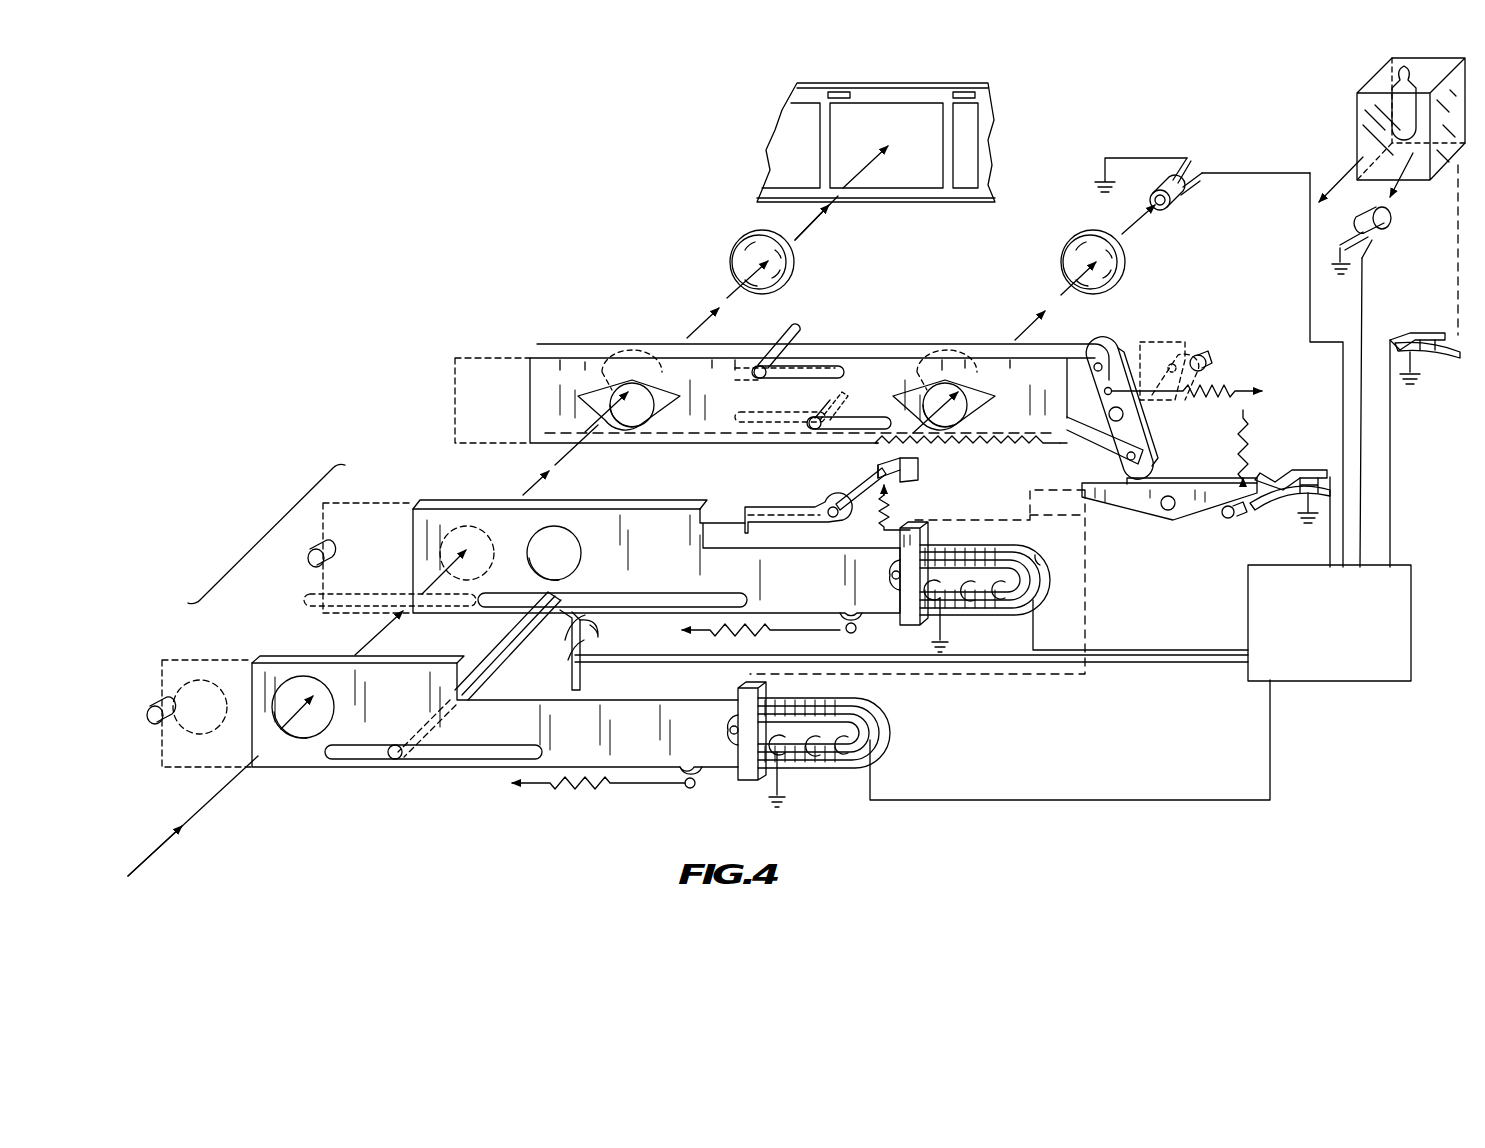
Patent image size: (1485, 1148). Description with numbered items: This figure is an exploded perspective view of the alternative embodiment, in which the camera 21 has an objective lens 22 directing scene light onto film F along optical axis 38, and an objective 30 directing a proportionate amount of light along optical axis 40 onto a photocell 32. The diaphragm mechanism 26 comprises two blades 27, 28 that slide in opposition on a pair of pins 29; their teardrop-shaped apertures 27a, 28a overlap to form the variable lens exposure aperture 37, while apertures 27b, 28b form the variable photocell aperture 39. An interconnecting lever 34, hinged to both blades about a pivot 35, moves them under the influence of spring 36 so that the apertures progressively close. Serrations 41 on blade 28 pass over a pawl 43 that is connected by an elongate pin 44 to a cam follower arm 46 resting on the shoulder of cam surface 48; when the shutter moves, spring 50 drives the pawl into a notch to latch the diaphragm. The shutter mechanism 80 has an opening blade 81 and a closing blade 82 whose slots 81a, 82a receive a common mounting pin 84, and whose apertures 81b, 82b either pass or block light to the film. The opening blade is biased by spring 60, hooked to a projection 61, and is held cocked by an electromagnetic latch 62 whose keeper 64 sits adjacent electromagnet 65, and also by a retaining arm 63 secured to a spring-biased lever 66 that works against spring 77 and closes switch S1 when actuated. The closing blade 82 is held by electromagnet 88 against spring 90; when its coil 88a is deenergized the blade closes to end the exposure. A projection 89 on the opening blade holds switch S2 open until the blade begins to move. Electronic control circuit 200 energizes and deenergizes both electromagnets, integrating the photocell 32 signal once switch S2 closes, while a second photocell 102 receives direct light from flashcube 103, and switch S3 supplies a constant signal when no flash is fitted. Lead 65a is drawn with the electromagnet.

The film F is at (900, 72).
The camera 21 is at (254, 441).
The objective lens 22 is at (794, 262).
The diaphragm mechanism 26 is at (436, 398).
The diaphragm blade 27 is at (585, 342).
The teardrop-shaped aperture 27a is at (590, 382).
The teardrop-shaped aperture 27b is at (905, 378).
The diaphragm blade 28 is at (550, 448).
The teardrop-shaped aperture 28a is at (668, 398).
The teardrop-shaped aperture 28b is at (980, 398).
The pins 29 is at (762, 372).
The objective 30 is at (1125, 262).
The photocell 32 is at (1186, 200).
The interconnecting lever 34 is at (1150, 440).
The pivot 35 is at (1124, 414).
The spring 36 is at (1237, 397).
The variable lens exposure aperture 37 is at (632, 385).
The optical axis 38 is at (808, 212).
The variable photocell aperture 39 is at (945, 385).
The optical axis 40 is at (1083, 290).
The serrations 41 is at (977, 448).
The pawl 43 is at (918, 468).
The elongate pin 44 is at (863, 480).
The cam follower arm 46 is at (776, 475).
The cam surface 48 is at (718, 500).
The spring 50 is at (894, 500).
The spring 60 is at (766, 640).
The projection 61 is at (860, 635).
The electromagnetic latch 62 is at (1045, 528).
The retaining arm 63 is at (1082, 557).
The electromagnetic keeper 64 is at (908, 628).
The electromagnet 65 is at (1050, 598).
The coil lead 65a is at (975, 608).
The lever 66 is at (1175, 508).
The spring 77 is at (1233, 440).
The shutter mechanism 80 is at (220, 575).
The opening blade 81 is at (640, 505).
The slot 81a is at (667, 595).
The aperture 81b is at (560, 533).
The closing blade 82 is at (325, 770).
The slot 82a is at (466, 764).
The aperture 82b is at (308, 680).
The common mounting pin 84 is at (495, 644).
The electromagnet 88 is at (890, 714).
The coil 88a is at (812, 772).
The projection 89 is at (560, 640).
The spring 90 is at (572, 793).
The photocell 102 is at (1395, 228).
The flashcube 103 is at (1357, 94).
The electronic control circuit 200 is at (1340, 682).
The switch S1 is at (1298, 473).
The switch S2 is at (558, 666).
The switch S3 is at (1431, 334).